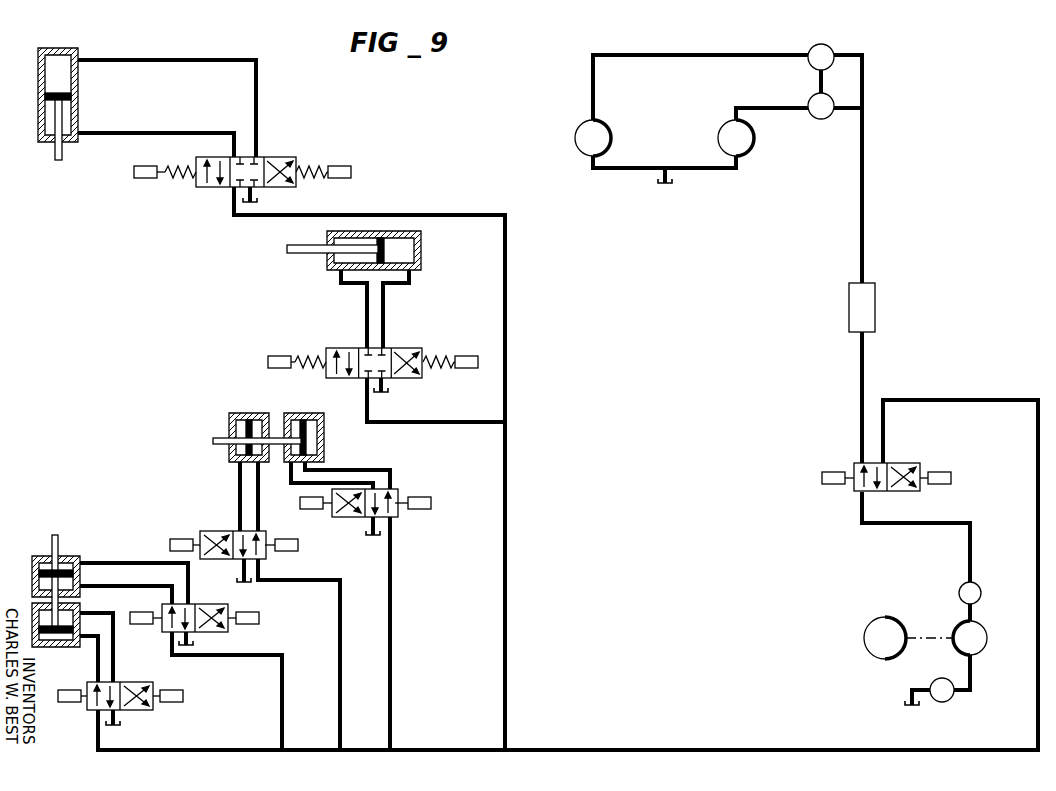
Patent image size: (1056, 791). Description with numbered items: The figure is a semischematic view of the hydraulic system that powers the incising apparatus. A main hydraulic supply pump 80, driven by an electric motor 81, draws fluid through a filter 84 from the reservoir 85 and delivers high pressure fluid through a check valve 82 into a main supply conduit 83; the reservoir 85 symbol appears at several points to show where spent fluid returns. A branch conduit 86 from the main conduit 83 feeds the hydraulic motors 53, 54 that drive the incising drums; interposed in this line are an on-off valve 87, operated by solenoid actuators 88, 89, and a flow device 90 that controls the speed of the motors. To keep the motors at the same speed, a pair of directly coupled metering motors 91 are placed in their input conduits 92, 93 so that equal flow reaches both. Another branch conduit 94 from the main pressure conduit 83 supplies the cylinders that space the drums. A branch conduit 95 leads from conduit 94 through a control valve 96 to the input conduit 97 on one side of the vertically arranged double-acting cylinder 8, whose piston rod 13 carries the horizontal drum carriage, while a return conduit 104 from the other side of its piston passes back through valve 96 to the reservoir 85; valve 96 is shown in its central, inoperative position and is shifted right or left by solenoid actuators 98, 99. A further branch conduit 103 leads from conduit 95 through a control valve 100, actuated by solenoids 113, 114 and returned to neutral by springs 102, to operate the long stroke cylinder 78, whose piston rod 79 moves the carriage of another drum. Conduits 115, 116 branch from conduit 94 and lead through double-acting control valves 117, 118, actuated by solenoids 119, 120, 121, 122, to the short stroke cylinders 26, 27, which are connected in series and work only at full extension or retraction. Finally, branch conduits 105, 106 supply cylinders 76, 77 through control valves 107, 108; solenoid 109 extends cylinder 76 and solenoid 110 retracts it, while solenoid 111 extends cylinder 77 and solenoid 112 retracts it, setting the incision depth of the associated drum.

The hydraulic cylinder 8 is at (38, 74).
The piston rod 13 is at (55, 156).
The short stroke hydraulic cylinder 26 is at (64, 556).
The short stroke hydraulic cylinder 27 is at (48, 647).
The hydraulic motor 53 is at (576, 141).
The hydraulic motor 54 is at (746, 154).
The short stroke cylinder 76 is at (240, 413).
The short stroke cylinder 77 is at (300, 413).
The long stroke hydraulic cylinder 78 is at (421, 255).
The piston rod 79 is at (292, 254).
The main hydraulic supply pump 80 is at (960, 650).
The electric motor 81 is at (864, 640).
The check valve 82 is at (960, 592).
The main supply conduit 83 is at (968, 545).
The filter 84 is at (950, 700).
The reservoir 85 is at (268, 204).
The branch conduit 86 is at (865, 262).
The on-off valve 87 is at (890, 463).
The solenoid actuator 88 is at (940, 472).
The solenoid actuator 89 is at (828, 472).
The flow device 90 is at (876, 312).
The metering motor 91 is at (834, 50).
The input conduit 92 is at (671, 58).
The input conduit 93 is at (746, 108).
The branch conduit 94 is at (706, 748).
The branch conduit 95 is at (507, 268).
The control valve 96 is at (264, 157).
The input conduit 97 is at (160, 134).
The solenoid actuator 98 is at (145, 180).
The solenoid actuator 99 is at (345, 174).
The control valve 100 is at (392, 348).
The spring 102 is at (318, 350).
The branch conduit 103 is at (437, 424).
The return conduit 104 is at (186, 64).
The branch conduit 105 is at (342, 616).
The branch conduit 106 is at (390, 628).
The control valve 107 is at (208, 531).
The control valve 108 is at (392, 489).
The solenoid 109 is at (292, 551).
The solenoid 110 is at (172, 539).
The solenoid 111 is at (425, 511).
The solenoid 112 is at (308, 510).
The solenoid 113 is at (478, 368).
The solenoid 114 is at (272, 356).
The conduit 115 is at (282, 686).
The conduit 116 is at (96, 738).
The double-acting control valve 117 is at (229, 628).
The double-acting control valve 118 is at (125, 682).
The solenoid 119 is at (250, 612).
The solenoid 120 is at (146, 612).
The solenoid 121 is at (176, 698).
The solenoid 122 is at (78, 702).